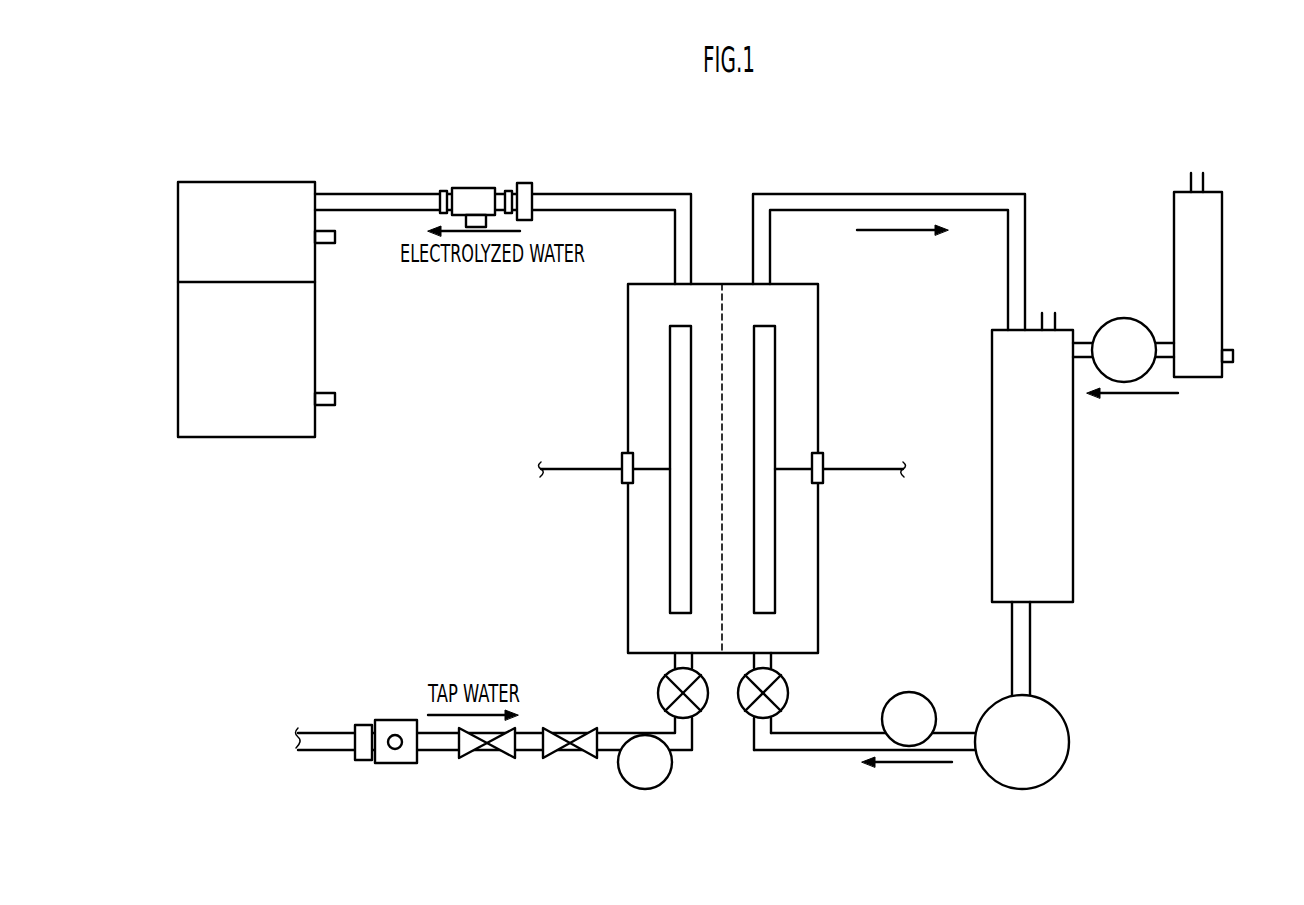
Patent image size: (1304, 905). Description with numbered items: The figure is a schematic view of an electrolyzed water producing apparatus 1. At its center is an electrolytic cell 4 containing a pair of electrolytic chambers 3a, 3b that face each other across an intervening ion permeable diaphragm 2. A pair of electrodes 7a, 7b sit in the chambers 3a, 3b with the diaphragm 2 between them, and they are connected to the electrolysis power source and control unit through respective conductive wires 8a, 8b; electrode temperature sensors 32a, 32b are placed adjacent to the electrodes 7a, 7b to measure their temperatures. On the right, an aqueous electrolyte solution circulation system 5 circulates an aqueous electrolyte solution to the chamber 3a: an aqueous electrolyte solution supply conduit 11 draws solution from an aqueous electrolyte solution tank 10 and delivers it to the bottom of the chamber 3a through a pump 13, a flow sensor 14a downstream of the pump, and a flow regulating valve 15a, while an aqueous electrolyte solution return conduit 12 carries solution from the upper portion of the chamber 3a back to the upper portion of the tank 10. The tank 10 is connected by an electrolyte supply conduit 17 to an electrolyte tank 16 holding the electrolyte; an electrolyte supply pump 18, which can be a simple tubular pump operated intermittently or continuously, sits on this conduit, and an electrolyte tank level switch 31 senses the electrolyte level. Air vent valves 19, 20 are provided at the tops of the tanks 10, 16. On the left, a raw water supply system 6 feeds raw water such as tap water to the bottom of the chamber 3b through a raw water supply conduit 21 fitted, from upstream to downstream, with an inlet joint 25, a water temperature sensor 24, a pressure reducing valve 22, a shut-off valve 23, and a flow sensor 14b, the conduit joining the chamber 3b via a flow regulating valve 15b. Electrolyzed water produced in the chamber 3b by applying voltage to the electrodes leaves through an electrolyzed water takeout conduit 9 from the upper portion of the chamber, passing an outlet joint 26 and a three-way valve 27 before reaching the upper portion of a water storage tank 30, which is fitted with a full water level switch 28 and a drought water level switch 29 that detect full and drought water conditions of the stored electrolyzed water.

The electrolyzed water producing apparatus 1 is at (396, 143).
The ion permeable diaphragm 2 is at (724, 300).
The electrolytic chamber 3a is at (819, 357).
The electrolytic chamber 3b is at (627, 357).
The electrolytic cell 4 is at (838, 297).
The aqueous electrolyte solution circulation system 5 is at (1060, 790).
The raw water supply system 6 is at (540, 795).
The electrode 7a is at (763, 614).
The electrode 7b is at (680, 614).
The conductive wire 8a is at (882, 472).
The conductive wire 8b is at (556, 472).
The electrolyzed water takeout conduit 9 is at (644, 192).
The aqueous electrolyte solution tank 10 is at (1074, 468).
The aqueous electrolyte solution supply conduit 11 is at (1031, 650).
The aqueous electrolyte solution return conduit 12 is at (888, 192).
The pump 13 is at (1070, 729).
The flow sensor 14a is at (910, 691).
The flow sensor 14b is at (645, 790).
The flow regulating valve 15a is at (789, 693).
The flow regulating valve 15b is at (657, 693).
The electrolyte tank 16 is at (1223, 325).
The electrolyte supply conduit 17 is at (1160, 340).
The electrolyte supply pump 18 is at (1124, 318).
The air vent valve 19 is at (1057, 322).
The air vent valve 20 is at (1205, 184).
The raw water supply conduit 21 is at (690, 753).
The pressure reducing valve 22 is at (505, 759).
The shut-off valve 23 is at (588, 759).
The water temperature sensor 24 is at (395, 764).
The inlet joint 25 is at (363, 761).
The outlet joint 26 is at (524, 183).
The three-way valve 27 is at (473, 188).
The full water level switch 28 is at (336, 239).
The drought water level switch 29 is at (336, 400).
The water storage tank 30 is at (290, 438).
The electrolyte tank level switch 31 is at (1234, 357).
The electrode temperature sensor 32a is at (824, 458).
The electrode temperature sensor 32b is at (621, 458).